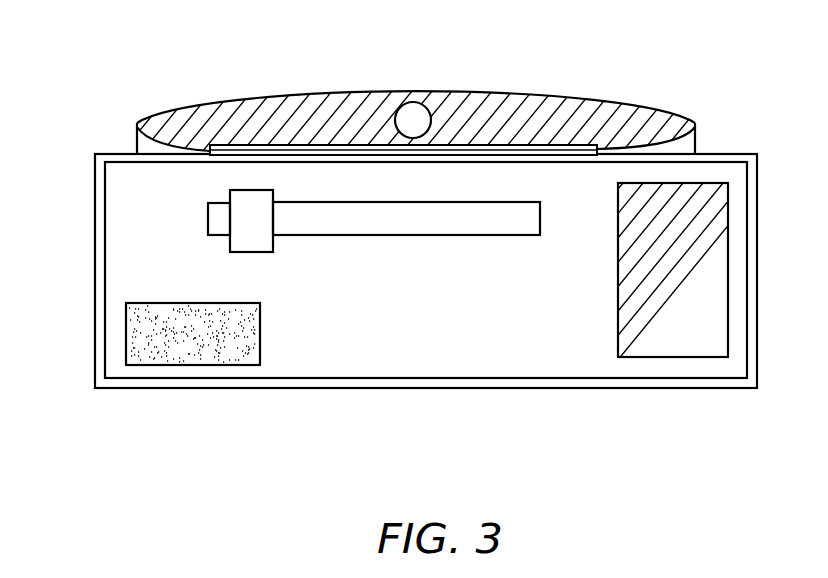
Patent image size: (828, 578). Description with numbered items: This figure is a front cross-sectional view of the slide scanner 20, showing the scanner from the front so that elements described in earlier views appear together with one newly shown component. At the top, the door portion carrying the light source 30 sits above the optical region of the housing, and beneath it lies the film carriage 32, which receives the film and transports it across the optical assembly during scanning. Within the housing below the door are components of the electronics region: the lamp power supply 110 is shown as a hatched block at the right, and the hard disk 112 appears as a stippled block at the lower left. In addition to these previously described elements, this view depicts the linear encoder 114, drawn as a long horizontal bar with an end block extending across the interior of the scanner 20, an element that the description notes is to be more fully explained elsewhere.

The slide scanner 20 is at (118, 72).
The light source 30 is at (417, 115).
The film carriage 32 is at (573, 140).
The lamp power supply 110 is at (675, 347).
The hard disk 112 is at (195, 357).
The linear encoder 114 is at (427, 223).